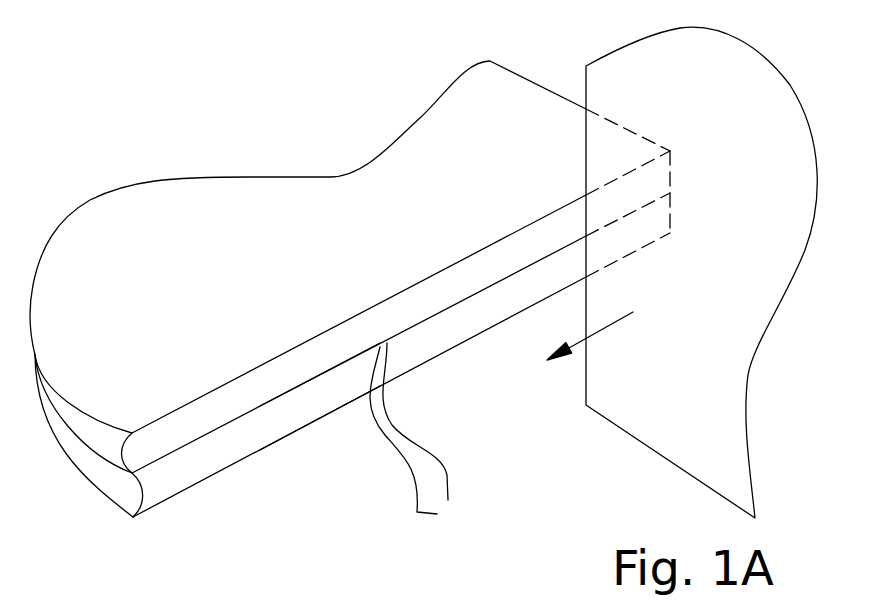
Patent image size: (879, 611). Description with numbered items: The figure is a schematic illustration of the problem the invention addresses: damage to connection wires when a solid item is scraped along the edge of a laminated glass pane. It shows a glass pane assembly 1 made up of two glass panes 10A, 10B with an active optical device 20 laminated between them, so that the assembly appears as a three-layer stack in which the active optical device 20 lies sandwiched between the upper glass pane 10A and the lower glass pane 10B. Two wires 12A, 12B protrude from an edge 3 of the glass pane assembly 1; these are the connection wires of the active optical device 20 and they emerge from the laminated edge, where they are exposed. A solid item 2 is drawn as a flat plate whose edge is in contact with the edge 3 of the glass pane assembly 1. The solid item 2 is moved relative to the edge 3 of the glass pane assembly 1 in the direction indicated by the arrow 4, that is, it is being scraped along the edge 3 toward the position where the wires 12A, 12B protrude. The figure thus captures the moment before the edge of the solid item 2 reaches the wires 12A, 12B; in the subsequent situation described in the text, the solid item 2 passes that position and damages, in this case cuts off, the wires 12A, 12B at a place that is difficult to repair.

The glass pane assembly 1 is at (165, 103).
The glass pane 10A is at (518, 100).
The glass pane 10B is at (172, 480).
The active optical device 20 is at (223, 432).
The edge 3 is at (320, 400).
The wire 12A is at (448, 468).
The wire 12B is at (437, 513).
The arrow 4 is at (558, 358).
The solid item 2 is at (732, 448).